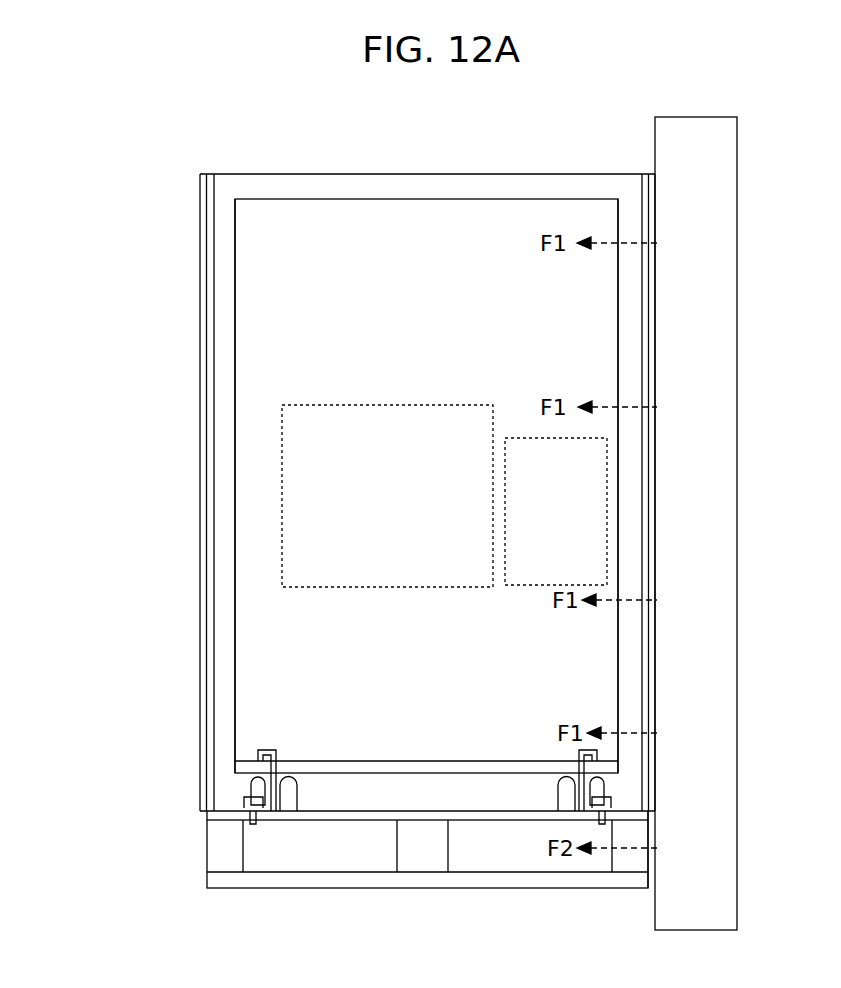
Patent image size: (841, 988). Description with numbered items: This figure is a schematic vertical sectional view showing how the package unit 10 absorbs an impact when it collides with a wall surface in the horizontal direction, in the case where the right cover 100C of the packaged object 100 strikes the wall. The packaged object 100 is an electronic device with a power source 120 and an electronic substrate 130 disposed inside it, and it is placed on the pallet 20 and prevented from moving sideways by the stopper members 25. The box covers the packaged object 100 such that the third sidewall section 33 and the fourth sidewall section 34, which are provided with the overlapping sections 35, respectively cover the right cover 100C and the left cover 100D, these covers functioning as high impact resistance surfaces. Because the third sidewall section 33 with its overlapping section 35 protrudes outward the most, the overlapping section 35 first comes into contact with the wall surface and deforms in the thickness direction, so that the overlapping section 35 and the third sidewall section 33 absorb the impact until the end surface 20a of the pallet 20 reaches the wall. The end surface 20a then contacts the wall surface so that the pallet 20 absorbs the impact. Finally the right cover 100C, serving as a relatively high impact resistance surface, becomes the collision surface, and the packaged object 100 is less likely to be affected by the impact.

The package unit 10 is at (748, 523).
The pallet 20 is at (203, 826).
The end surface 20a is at (660, 848).
The stopper member 25 is at (277, 752).
The third sidewall section 33 is at (645, 228).
The fourth sidewall section 34 is at (210, 282).
The overlapping section 35 is at (200, 203).
The packaged object 100 is at (298, 239).
The right cover 100C is at (622, 347).
The left cover 100D is at (233, 462).
The power source 120 is at (412, 501).
The electronic substrate 130 is at (582, 522).